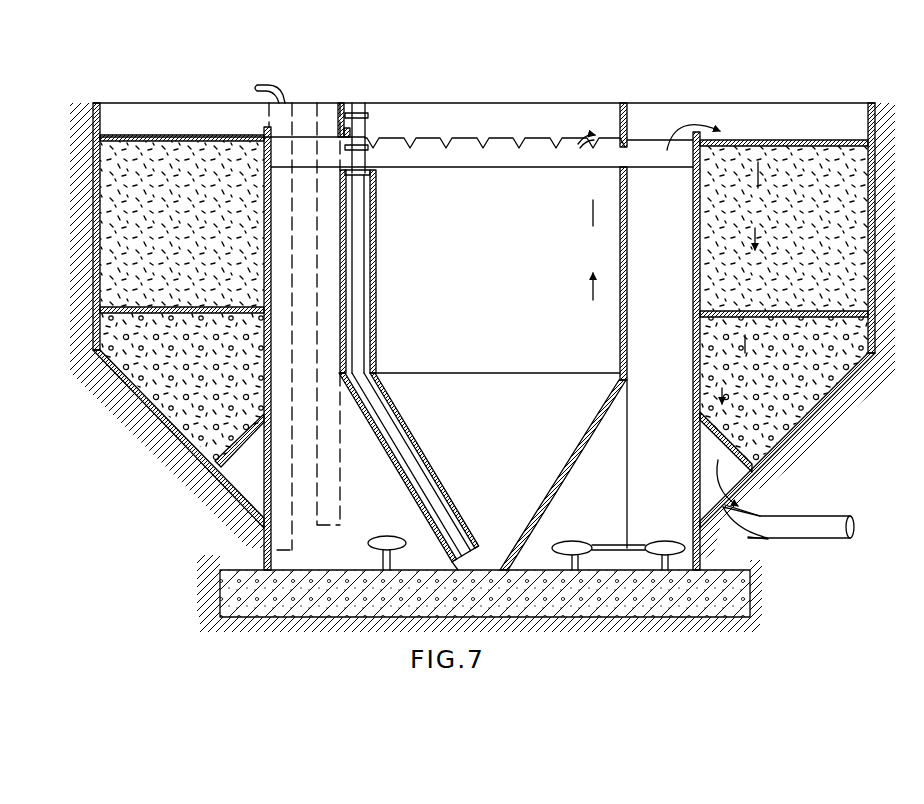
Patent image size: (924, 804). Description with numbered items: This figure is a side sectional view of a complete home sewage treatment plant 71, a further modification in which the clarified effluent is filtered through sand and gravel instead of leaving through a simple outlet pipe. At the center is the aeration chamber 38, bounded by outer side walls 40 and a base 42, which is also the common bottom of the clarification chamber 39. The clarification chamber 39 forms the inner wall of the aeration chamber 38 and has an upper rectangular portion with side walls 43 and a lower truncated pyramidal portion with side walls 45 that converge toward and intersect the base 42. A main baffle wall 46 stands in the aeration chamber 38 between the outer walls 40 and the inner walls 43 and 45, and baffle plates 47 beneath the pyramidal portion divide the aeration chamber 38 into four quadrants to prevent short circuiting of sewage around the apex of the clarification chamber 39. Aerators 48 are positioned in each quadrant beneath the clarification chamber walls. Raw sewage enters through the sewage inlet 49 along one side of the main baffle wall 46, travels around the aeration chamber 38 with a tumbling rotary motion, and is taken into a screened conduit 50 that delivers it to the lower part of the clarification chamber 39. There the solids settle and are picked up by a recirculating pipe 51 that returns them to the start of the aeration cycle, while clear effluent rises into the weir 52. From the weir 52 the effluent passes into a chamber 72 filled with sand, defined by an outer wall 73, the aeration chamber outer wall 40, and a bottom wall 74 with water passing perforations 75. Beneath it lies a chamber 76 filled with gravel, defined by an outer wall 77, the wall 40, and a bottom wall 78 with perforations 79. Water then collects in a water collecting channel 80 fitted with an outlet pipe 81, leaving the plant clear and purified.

The aeration chamber 38 is at (672, 260).
The clarification chamber 39 is at (515, 260).
The outer side walls 40 is at (693, 200).
The base 42 is at (547, 573).
The side walls 43 is at (620, 330).
The side walls 45 is at (588, 433).
The main baffle wall 46 is at (370, 477).
The baffle plates 47 is at (600, 487).
The aerators 48 is at (393, 537).
The sewage inlet 49 is at (270, 82).
The conduit 50 is at (427, 445).
The recirculating pipe 51 is at (455, 518).
The weir 52 is at (513, 150).
The sewage treatment plant 71 is at (708, 82).
The chamber filled with sand 72 is at (185, 212).
The outer wall 73 is at (92, 220).
The bottom wall 74 is at (207, 307).
The water passing perforations 75 is at (165, 307).
The chamber filled with gravel 76 is at (202, 364).
The outer wall 77 is at (122, 405).
The bottom wall 78 is at (722, 426).
The perforations 79 is at (737, 455).
The water collecting channel 80 is at (255, 474).
The outlet pipe 81 is at (805, 518).